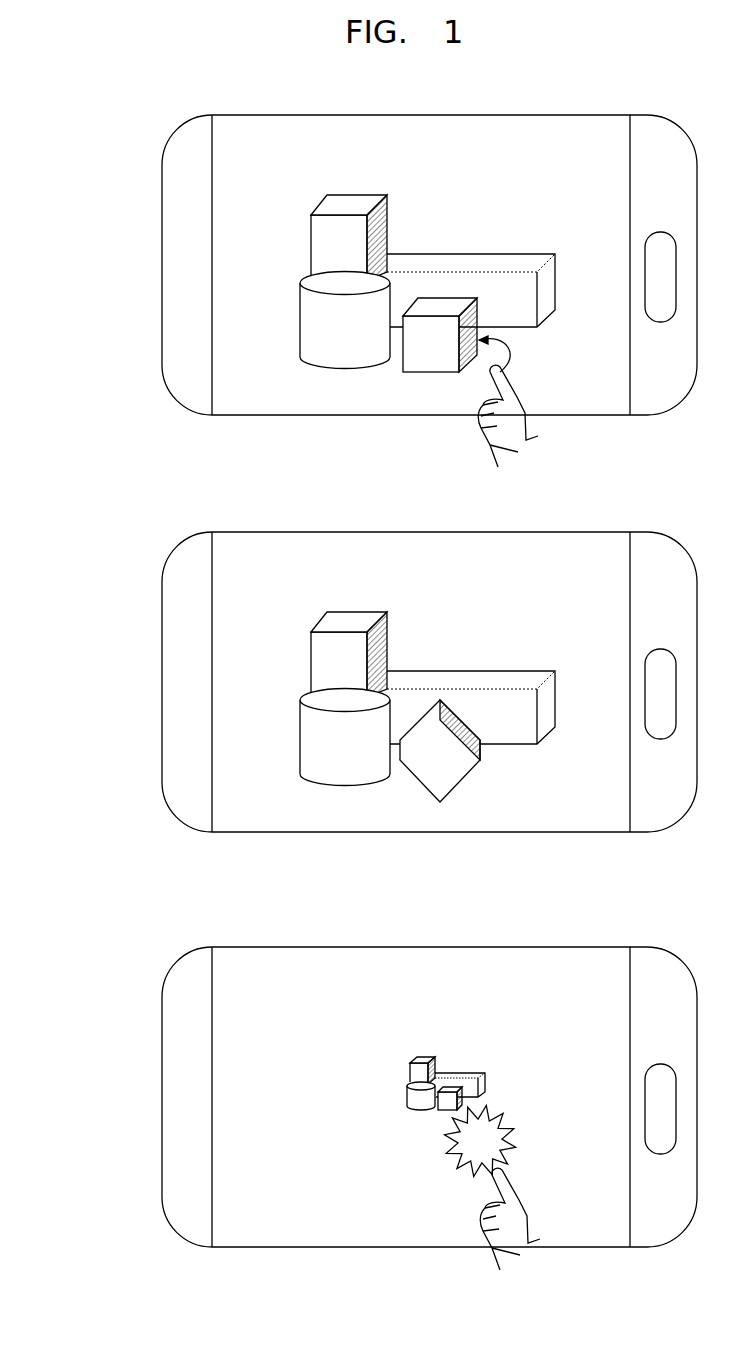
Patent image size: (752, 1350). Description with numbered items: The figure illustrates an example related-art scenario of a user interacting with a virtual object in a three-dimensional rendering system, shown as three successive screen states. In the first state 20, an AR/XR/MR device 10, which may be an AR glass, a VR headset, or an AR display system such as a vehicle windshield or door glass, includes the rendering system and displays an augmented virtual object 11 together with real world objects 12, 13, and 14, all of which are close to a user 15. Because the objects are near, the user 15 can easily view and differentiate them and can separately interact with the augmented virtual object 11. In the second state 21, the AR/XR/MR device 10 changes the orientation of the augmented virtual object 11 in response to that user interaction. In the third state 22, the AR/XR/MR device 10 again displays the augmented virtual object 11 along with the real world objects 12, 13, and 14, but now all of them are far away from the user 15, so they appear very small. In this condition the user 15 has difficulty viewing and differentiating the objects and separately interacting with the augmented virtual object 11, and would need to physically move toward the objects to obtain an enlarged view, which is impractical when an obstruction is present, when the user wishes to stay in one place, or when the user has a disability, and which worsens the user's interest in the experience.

The AR/XR/MR device 10 is at (162, 215).
The augmented virtual object 11 is at (428, 353).
The real world object 12 is at (310, 320).
The real world object 13 is at (350, 208).
The real world object 14 is at (467, 268).
The user 15 is at (485, 437).
The scenario of objects close to the user 20 is at (136, 121).
The scenario of changed orientation 21 is at (136, 539).
The scenario of objects far from the user 22 is at (136, 954).